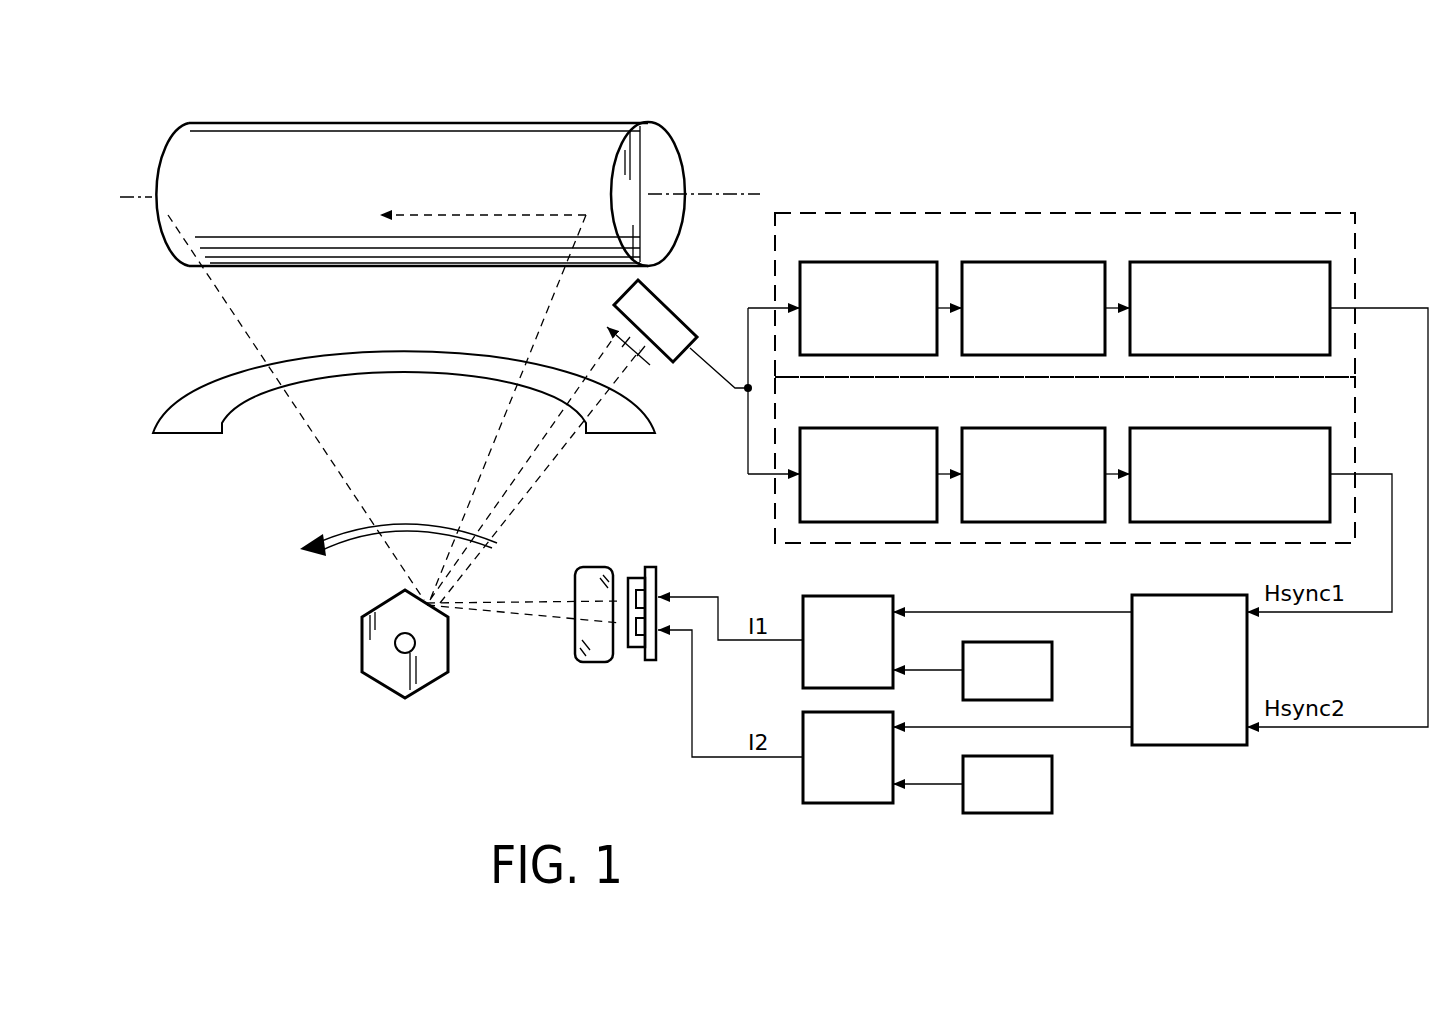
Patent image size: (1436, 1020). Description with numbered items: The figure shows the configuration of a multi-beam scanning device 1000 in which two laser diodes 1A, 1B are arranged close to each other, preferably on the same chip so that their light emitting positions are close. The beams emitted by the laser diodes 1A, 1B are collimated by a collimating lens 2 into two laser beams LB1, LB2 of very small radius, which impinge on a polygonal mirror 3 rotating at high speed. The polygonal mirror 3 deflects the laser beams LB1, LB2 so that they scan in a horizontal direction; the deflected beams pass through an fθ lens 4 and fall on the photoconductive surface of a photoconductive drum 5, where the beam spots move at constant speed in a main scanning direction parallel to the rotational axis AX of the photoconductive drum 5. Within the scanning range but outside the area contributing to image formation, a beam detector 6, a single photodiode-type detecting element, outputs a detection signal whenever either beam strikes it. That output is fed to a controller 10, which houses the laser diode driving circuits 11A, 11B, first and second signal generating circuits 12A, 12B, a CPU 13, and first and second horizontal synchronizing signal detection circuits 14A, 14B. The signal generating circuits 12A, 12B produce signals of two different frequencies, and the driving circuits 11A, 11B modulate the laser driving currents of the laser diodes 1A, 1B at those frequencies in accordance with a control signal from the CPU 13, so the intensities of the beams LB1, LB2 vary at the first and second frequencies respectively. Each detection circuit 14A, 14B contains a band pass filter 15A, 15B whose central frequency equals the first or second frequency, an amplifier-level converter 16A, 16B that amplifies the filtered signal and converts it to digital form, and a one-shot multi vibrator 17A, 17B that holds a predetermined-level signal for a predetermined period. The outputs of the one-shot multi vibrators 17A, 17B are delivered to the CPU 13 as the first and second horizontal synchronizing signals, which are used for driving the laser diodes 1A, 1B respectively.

The multi-beam scanning device 1000 is at (818, 148).
The controller 10 is at (1130, 197).
The laser diode 1A is at (643, 541).
The laser diode 1B is at (635, 647).
The collimating lens 2 is at (578, 656).
The polygonal mirror 3 is at (380, 672).
The fθ lens 4 is at (222, 383).
The photoconductive drum 5 is at (657, 146).
The beam detector 6 is at (712, 298).
The drum axis AX is at (745, 192).
The laser beam LB1 is at (557, 577).
The laser beam LB2 is at (523, 615).
The laser driving circuit 11A is at (872, 596).
The laser driving circuit 11B is at (825, 803).
The first signal generating circuit 12A is at (1052, 660).
The second signal generating circuit 12B is at (1052, 775).
The CPU 13 is at (1192, 745).
The first horizontal synchronizing signal detection circuit 14A is at (1395, 417).
The second horizontal synchronizing signal detection circuit 14B is at (1395, 252).
The first band pass filter 15A is at (875, 428).
The second band pass filter 15B is at (875, 262).
The first amplifier-level converter 16A is at (1034, 428).
The second amplifier-level converter 16B is at (1034, 262).
The first one-shot multi vibrator 17A is at (1232, 428).
The second one-shot multi vibrator 17B is at (1232, 262).